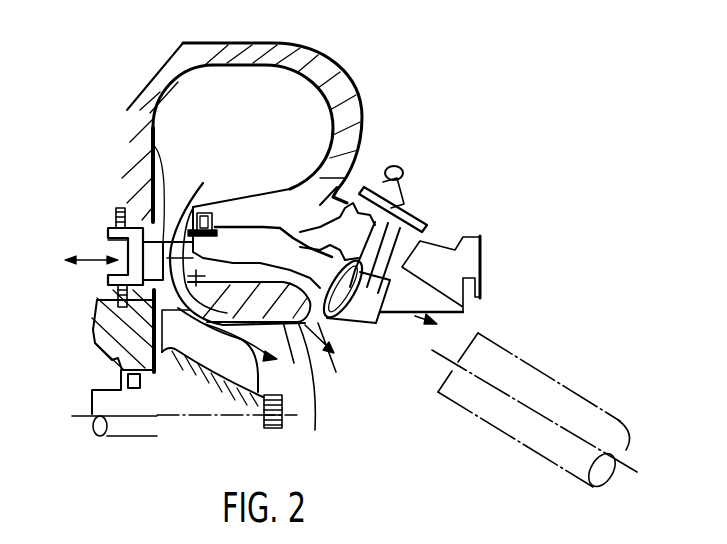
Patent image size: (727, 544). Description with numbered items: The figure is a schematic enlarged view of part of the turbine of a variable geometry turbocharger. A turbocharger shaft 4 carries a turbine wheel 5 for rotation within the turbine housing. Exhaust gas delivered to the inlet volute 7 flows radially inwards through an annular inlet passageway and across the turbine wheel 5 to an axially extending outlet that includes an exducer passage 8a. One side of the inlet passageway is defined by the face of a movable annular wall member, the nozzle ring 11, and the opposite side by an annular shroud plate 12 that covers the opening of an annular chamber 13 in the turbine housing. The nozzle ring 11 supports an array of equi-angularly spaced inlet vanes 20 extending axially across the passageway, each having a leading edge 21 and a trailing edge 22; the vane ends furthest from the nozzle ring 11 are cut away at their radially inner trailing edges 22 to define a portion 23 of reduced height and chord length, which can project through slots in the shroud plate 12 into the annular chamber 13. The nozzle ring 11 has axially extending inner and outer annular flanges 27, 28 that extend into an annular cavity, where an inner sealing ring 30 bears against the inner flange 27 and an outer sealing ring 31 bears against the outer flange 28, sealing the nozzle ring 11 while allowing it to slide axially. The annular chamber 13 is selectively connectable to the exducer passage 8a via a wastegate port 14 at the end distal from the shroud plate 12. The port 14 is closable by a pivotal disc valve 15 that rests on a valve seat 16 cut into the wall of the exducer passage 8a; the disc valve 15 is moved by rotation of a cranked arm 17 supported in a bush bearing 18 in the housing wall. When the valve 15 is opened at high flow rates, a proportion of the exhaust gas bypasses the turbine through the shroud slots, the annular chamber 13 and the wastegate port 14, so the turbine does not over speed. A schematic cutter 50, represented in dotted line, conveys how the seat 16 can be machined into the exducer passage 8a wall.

The turbocharger shaft 4 is at (95, 433).
The turbine wheel 5 is at (208, 393).
The volute 7 is at (193, 93).
The exducer passage 8a is at (241, 288).
The nozzle ring 11 is at (110, 226).
The annular shroud plate 12 is at (227, 214).
The annular chamber 13 is at (277, 238).
The wastegate port 14 is at (300, 230).
The pivotal disc valve 15 is at (402, 267).
The valve seat 16 is at (330, 362).
The cranked arm 17 is at (404, 187).
The bush bearing 18 is at (416, 240).
The inlet vanes 20 is at (152, 218).
The leading edge 21 is at (150, 138).
The trailing edge 22 is at (118, 330).
The portion of reduced height 23 is at (260, 255).
The inner annular flange 27 is at (107, 277).
The outer annular flange 28 is at (107, 240).
The inner sealing ring 30 is at (116, 294).
The outer sealing ring 31 is at (120, 218).
The schematic cutter 50 is at (560, 380).